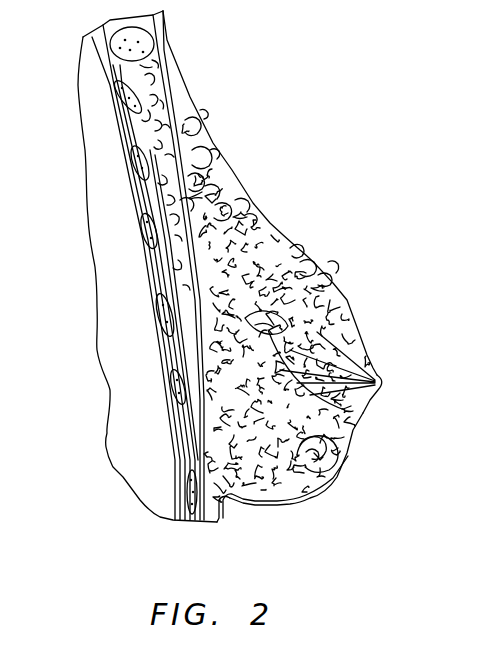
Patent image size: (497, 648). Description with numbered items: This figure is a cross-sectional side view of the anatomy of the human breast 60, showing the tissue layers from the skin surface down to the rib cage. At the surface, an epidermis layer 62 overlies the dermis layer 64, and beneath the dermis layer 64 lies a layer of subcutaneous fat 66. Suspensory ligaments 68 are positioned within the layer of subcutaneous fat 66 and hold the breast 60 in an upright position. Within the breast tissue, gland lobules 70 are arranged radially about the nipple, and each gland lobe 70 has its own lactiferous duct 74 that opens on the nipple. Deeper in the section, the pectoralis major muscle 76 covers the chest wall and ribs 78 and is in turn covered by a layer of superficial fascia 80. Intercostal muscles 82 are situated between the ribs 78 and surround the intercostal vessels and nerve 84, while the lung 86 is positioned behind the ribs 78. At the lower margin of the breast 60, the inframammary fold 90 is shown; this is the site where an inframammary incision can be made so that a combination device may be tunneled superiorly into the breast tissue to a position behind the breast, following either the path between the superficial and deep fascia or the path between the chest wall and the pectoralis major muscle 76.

The human breast 60 is at (324, 507).
The epidermis layer 62 is at (267, 222).
The dermis layer 64 is at (297, 253).
The layer of subcutaneous fat 66 is at (320, 443).
The suspensory ligaments 68 is at (333, 287).
The gland lobules 70 is at (250, 418).
The lactiferous duct 74 is at (380, 379).
The pectoralis major muscle 76 is at (170, 197).
The ribs 78 is at (140, 166).
The superficial fascia 80 is at (193, 265).
The intercostal muscles 82 is at (177, 353).
The intercostal vessels and nerve 84 is at (175, 428).
The lung 86 is at (137, 440).
The inframammary fold 90 is at (232, 500).